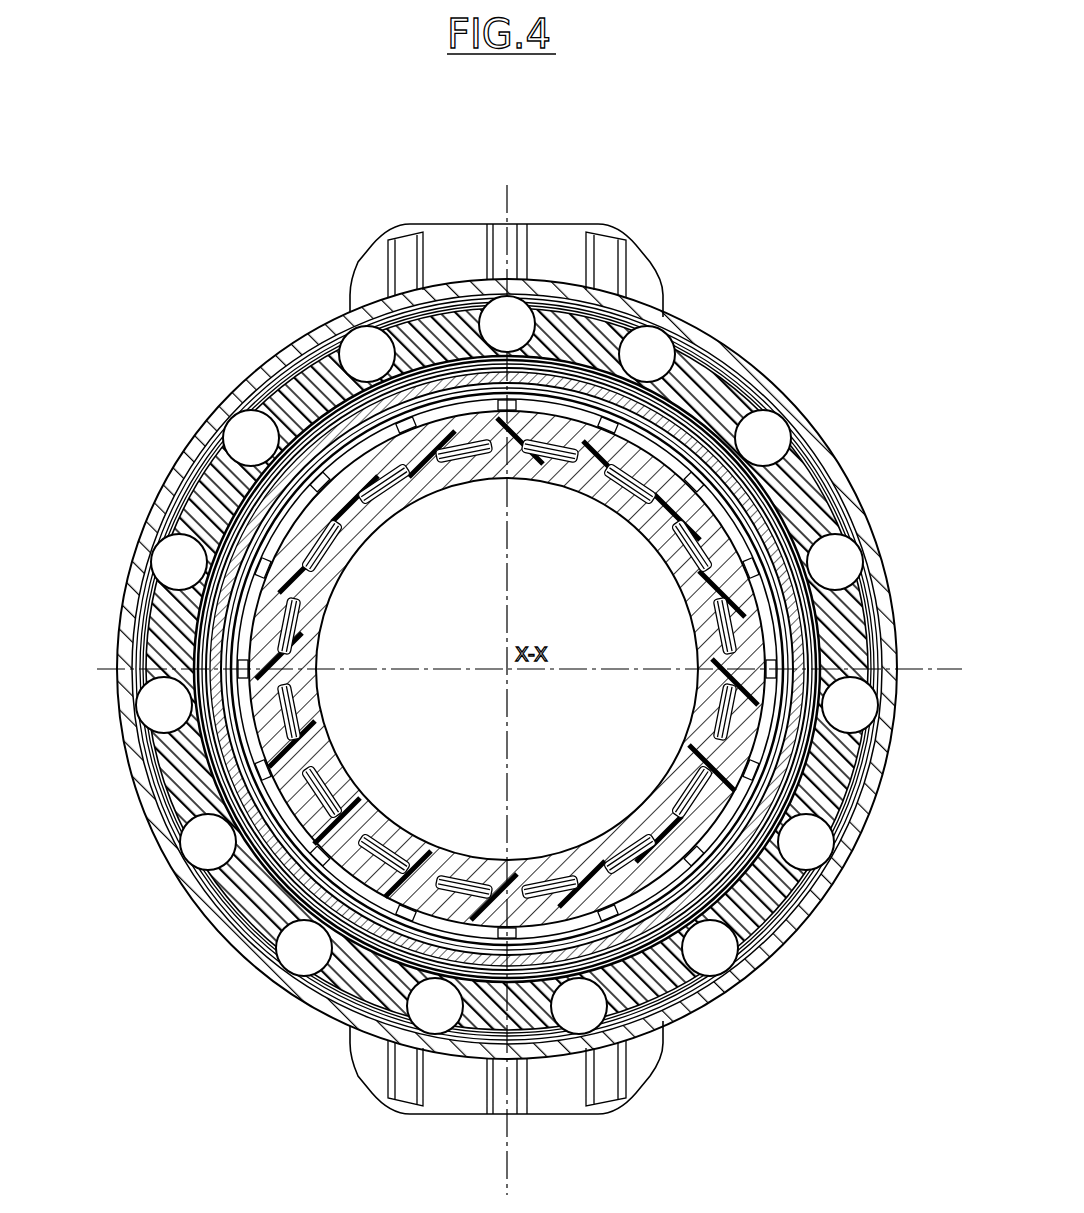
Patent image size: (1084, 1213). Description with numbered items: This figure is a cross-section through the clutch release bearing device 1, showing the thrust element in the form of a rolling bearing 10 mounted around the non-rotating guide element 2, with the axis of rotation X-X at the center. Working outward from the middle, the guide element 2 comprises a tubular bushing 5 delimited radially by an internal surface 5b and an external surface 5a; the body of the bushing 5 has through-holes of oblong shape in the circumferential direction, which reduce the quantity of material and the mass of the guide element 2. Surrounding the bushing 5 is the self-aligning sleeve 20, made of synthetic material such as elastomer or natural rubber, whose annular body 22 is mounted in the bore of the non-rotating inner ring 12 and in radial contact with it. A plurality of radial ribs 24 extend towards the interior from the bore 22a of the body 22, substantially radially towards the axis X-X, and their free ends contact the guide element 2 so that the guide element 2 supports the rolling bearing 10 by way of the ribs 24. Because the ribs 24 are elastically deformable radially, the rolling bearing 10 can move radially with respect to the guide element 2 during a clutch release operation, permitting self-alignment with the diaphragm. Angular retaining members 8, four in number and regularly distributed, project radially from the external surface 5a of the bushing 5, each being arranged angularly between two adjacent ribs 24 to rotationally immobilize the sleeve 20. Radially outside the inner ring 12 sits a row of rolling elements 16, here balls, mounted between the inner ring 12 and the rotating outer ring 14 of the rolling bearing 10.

The clutch release bearing device 1 is at (762, 311).
The guide element 2 is at (668, 769).
The bushing 5 is at (332, 838).
The external surface 5a is at (392, 977).
The internal surface 5b is at (340, 757).
The angular retaining members 8 is at (543, 335).
The rolling bearing 10 is at (820, 437).
The inner ring 12 is at (857, 532).
The outer ring 14 is at (776, 406).
The rolling elements 16 is at (862, 716).
The self-aligning sleeve 20 is at (806, 628).
The annular body 22 is at (806, 660).
The bore 22a is at (752, 748).
The radial ribs 24 is at (773, 520).